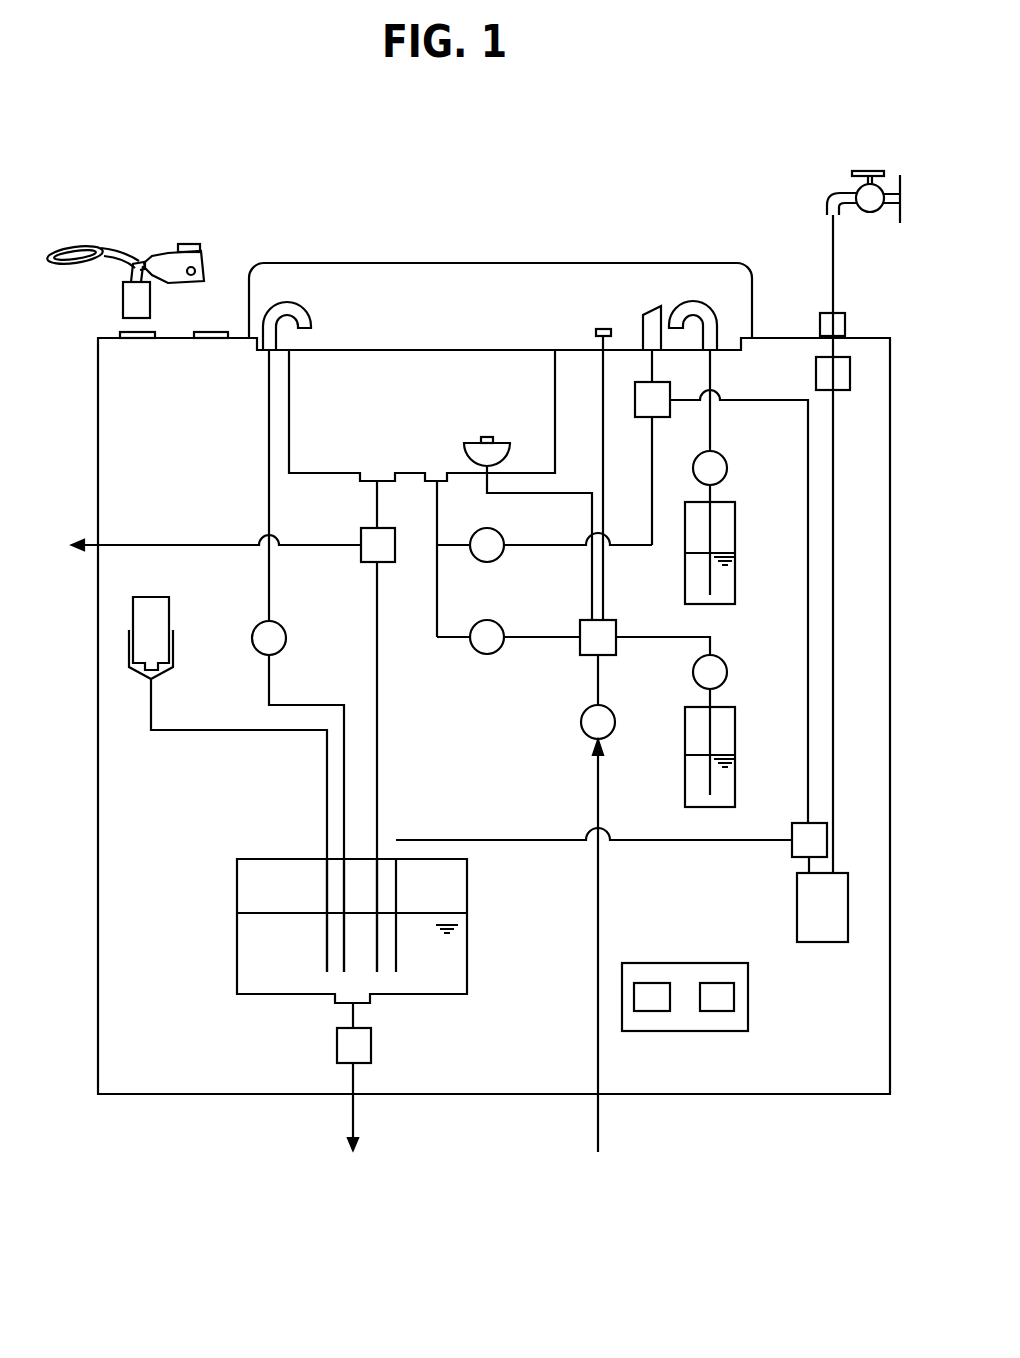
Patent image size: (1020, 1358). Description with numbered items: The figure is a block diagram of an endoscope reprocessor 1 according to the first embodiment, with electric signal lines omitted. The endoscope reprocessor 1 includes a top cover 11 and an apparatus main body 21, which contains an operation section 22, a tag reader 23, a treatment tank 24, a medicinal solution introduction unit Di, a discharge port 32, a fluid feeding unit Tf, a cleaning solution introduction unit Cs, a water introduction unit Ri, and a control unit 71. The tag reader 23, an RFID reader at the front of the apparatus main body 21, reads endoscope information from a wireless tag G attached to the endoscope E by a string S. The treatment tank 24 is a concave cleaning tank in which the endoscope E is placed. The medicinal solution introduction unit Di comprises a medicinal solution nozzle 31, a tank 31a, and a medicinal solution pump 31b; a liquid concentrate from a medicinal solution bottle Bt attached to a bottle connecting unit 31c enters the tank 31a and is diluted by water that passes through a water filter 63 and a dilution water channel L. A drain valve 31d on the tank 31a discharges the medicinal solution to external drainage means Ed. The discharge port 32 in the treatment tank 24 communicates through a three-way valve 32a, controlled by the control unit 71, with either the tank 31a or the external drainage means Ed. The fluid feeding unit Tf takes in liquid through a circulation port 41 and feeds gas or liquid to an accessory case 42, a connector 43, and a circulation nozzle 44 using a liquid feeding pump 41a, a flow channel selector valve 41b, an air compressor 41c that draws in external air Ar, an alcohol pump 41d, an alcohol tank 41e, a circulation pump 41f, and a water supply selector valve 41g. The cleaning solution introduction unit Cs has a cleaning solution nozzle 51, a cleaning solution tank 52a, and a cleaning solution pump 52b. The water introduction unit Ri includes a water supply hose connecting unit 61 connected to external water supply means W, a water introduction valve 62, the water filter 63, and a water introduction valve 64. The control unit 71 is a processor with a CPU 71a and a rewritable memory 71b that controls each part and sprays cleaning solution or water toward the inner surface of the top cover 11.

The endoscope reprocessor 1 is at (277, 161).
The top cover 11 is at (499, 262).
The apparatus main body 21 is at (790, 1095).
The operation section 22 is at (208, 332).
The tag reader 23 is at (122, 332).
The treatment tank 24 is at (379, 379).
The medicinal solution nozzle 31 is at (312, 307).
The tank 31a is at (423, 996).
The medicinal solution pump 31b is at (307, 611).
The bottle connecting unit 31c is at (216, 763).
The drain valve 31d is at (337, 1045).
The discharge port 32 is at (377, 481).
The three-way valve 32a is at (395, 548).
The circulation port 41 is at (437, 481).
The liquid feeding pump 41a is at (497, 621).
The flow channel selector valve 41b is at (606, 620).
The air compressor 41c is at (606, 734).
The alcohol pump 41d is at (692, 672).
The alcohol tank 41e is at (737, 720).
The circulation pump 41f is at (495, 531).
The water supply selector valve 41g is at (672, 396).
The accessory case 42 is at (470, 437).
The connector 43 is at (603, 328).
The circulation nozzle 44 is at (643, 315).
The cleaning solution nozzle 51 is at (700, 304).
The cleaning solution tank 52a is at (685, 580).
The cleaning solution pump 52b is at (693, 468).
The water supply hose connecting unit 61 is at (848, 323).
The water introduction valve 62 is at (816, 375).
The water filter 63 is at (822, 943).
The water introduction valve 64 is at (792, 830).
The control unit 71 is at (685, 999).
The central processing unit 71a is at (652, 1012).
The memory 71b is at (716, 1012).
The wireless tag G is at (122, 292).
The string S is at (135, 262).
The endoscope E is at (188, 245).
The medicinal solution bottle Bt is at (152, 597).
The medicinal solution introduction unit Di is at (259, 496).
The external drainage means Ed is at (208, 856).
The fluid feeding unit Tf is at (428, 627).
The cleaning solution introduction unit Cs is at (727, 613).
The external air Ar is at (602, 959).
The water introduction unit Ri is at (774, 871).
The dilution water channel L is at (687, 842).
The external water supply means W is at (838, 192).